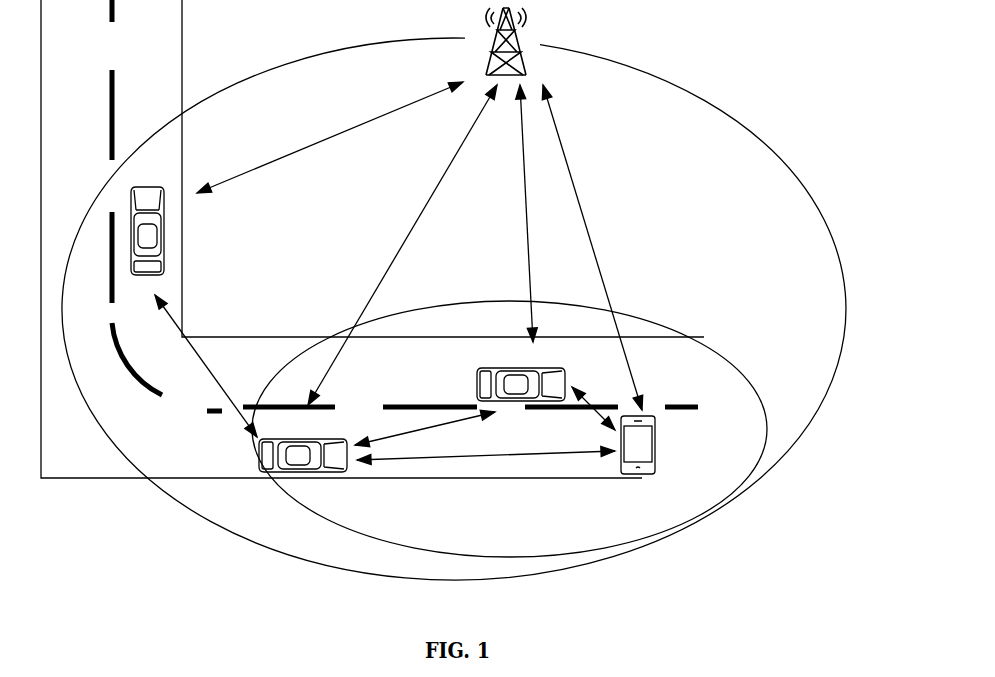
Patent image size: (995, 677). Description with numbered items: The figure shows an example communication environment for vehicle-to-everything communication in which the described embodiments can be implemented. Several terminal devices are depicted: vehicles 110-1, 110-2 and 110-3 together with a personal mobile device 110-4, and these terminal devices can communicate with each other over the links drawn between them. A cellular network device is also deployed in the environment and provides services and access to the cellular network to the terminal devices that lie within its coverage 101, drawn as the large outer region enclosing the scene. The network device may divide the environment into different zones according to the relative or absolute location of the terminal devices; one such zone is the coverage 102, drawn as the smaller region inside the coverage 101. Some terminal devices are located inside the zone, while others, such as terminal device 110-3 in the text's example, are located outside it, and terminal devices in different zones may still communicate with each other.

The coverage 101 is at (790, 168).
The coverage 102 is at (722, 356).
The vehicle 110-1 is at (300, 441).
The vehicle 110-2 is at (505, 368).
The vehicle 110-3 is at (658, 447).
The personal mobile device 110-4 is at (165, 220).